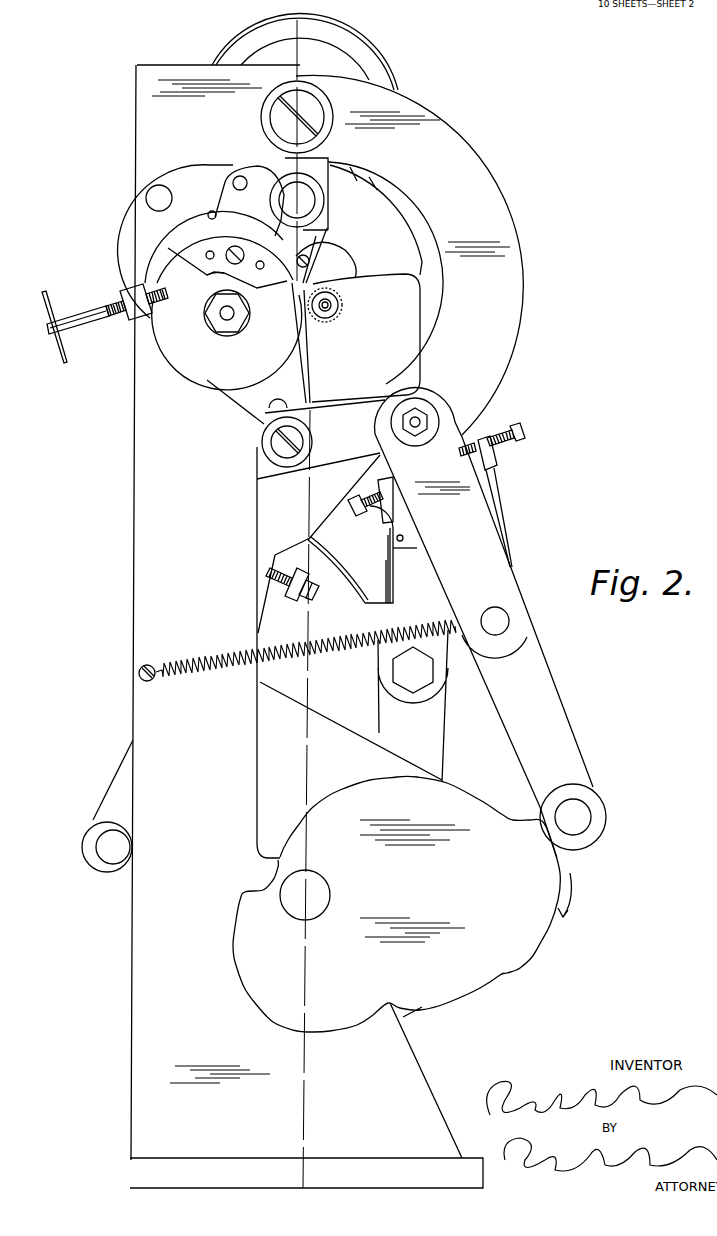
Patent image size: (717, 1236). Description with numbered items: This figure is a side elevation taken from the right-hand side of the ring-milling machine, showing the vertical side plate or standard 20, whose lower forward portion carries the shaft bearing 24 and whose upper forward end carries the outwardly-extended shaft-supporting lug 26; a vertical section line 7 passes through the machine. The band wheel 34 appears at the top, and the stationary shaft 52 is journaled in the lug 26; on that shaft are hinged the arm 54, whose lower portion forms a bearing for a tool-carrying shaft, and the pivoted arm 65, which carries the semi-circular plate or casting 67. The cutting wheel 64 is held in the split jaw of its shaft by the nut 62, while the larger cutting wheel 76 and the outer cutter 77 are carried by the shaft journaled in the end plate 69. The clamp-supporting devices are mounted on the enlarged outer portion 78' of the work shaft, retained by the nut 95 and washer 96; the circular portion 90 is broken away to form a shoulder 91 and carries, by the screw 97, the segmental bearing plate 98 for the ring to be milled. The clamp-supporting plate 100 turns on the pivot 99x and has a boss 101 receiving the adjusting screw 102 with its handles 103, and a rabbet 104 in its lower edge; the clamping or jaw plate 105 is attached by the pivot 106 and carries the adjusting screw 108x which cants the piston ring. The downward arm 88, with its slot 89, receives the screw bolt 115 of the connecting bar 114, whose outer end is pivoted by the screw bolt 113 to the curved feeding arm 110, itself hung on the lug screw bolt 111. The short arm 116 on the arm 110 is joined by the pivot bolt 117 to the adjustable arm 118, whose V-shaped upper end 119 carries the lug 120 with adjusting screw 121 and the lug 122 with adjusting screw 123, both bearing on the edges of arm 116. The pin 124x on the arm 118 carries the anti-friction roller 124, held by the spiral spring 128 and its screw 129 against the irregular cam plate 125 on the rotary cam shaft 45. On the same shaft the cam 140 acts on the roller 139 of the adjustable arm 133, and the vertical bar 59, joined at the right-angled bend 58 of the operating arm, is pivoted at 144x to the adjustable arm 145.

The section line 7 is at (302, 605).
The shaft-supporting block or lug 26 is at (299, 74).
The band wheel 34 is at (386, 65).
The lug screw bolt 111 is at (313, 118).
The curved arm 110 is at (503, 224).
The nut 62 is at (340, 250).
The end plate 69 is at (366, 338).
The semi-circular plate or casting 67 is at (394, 368).
The stationary shaft 52 is at (314, 201).
The plate or arm 54 is at (327, 230).
The pivoted arm 65 is at (340, 250).
The milling or cutting wheel 64 is at (309, 262).
The cutting wheel 76 is at (343, 305).
The cutter 77 is at (336, 312).
The clamp-supporting plate 100 is at (130, 237).
The adjustable clamping or jaw plate 105 is at (222, 193).
The pivot 106 is at (237, 182).
The pivot 99x is at (147, 198).
The adjusting screw 108x is at (215, 216).
The shoulder 91 is at (165, 295).
The bearing plate 98 is at (185, 248).
The screw 97 is at (210, 277).
The nut 95 is at (212, 335).
The washer 96 is at (202, 317).
The outer portion of shaft 78' is at (254, 318).
The adjusting screw 102 is at (85, 319).
The handles 103 is at (63, 348).
The rabbet 104 is at (148, 316).
The boss 101 is at (135, 302).
The circular portion 90 is at (227, 380).
The arm 88 is at (238, 403).
The slot 89 is at (278, 413).
The screw bolt 115 is at (280, 447).
The connecting bar 114 is at (258, 466).
The side plate or standard 20 is at (150, 573).
The screw bolt 113 is at (432, 420).
The short arm 116 is at (490, 550).
The adjustable arm 118 is at (556, 716).
The pivot bolt 117 is at (497, 622).
The anti-friction roller 124 is at (594, 837).
The pin 124x is at (575, 817).
The adjusting screw 121 is at (527, 434).
The lug 120 is at (497, 467).
The V-shaped upper end 119 is at (492, 494).
The right-angled bend 58 is at (362, 529).
The vertical bar 59 is at (393, 610).
The lug 122 is at (378, 487).
The adjusting screw 123 is at (353, 498).
The spiral spring 128 is at (165, 652).
The screw 129 is at (137, 677).
The pivot 144x is at (400, 678).
The adjustable arm or plate 145 is at (440, 745).
The cam 140 is at (400, 772).
The irregular cam plate 125 is at (517, 952).
The shaft bearing 24 is at (278, 865).
The rotary cam shaft 45 is at (300, 906).
The anti-friction roller 139 is at (82, 847).
The adjustable plate or arm 133 is at (133, 761).